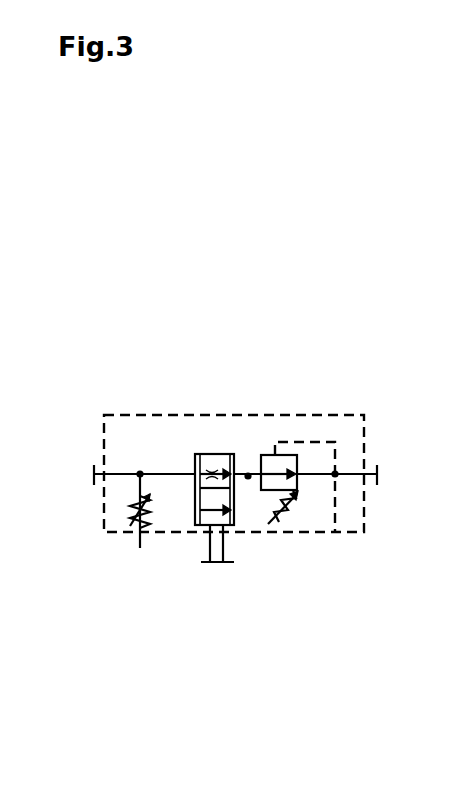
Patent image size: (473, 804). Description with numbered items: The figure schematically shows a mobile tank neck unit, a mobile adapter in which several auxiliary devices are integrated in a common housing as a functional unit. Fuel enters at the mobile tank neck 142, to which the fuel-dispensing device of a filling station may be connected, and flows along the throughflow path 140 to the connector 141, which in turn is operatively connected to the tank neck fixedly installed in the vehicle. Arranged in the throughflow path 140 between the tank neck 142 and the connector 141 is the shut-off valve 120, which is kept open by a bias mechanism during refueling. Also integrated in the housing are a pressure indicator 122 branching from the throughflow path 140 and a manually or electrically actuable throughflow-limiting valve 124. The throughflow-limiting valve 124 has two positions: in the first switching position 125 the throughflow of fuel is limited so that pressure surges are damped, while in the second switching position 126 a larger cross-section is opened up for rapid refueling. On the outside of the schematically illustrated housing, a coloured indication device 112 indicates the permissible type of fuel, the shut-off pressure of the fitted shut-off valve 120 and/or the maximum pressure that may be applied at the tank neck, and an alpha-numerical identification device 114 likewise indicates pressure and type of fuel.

The coloured indication device 112 is at (143, 412).
The alpha-numerical identification device 114 is at (260, 412).
The shut-off valve 120 is at (317, 455).
The pressure indicator 122 is at (139, 555).
The throughflow-limiting valve 124 is at (233, 547).
The first switching position 125 is at (218, 443).
The second switching position 126 is at (189, 512).
The throughflow path 140 is at (248, 476).
The connector 141 is at (383, 455).
The mobile tank neck 142 is at (88, 454).